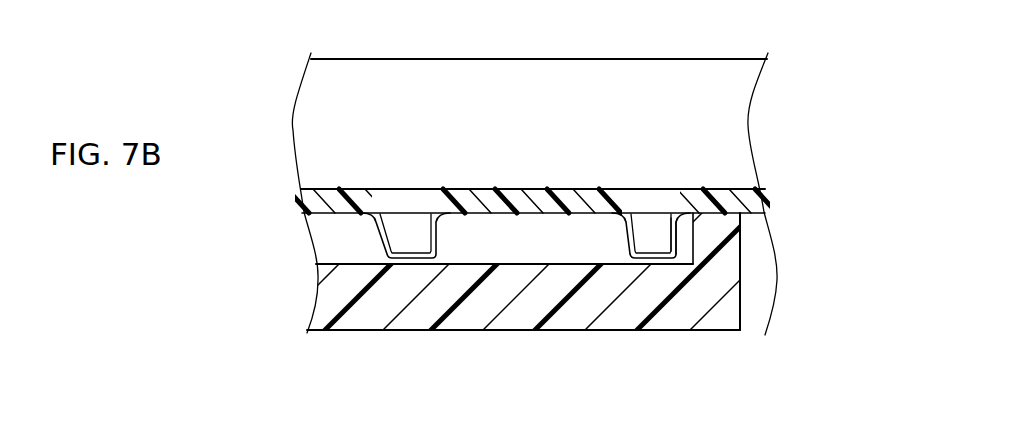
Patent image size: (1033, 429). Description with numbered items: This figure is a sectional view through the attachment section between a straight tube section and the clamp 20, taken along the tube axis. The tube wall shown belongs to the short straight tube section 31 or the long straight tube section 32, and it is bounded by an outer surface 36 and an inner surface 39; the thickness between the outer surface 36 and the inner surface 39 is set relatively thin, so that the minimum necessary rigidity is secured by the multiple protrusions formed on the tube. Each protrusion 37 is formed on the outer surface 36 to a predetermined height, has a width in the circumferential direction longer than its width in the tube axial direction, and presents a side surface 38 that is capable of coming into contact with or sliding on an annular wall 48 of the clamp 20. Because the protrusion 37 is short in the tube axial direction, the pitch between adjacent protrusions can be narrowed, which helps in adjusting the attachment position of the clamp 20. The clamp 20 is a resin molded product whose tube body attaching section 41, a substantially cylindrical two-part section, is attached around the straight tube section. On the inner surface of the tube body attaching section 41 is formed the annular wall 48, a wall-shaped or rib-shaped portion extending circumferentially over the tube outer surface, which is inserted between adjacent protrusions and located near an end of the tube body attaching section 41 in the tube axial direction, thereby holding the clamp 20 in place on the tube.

The clamp 20 is at (562, 333).
The short straight tube section 31 is at (301, 248).
The long straight tube section 32 is at (357, 202).
The outer surface 36 is at (527, 218).
The protrusion 37 is at (417, 262).
The side surface 38 is at (740, 280).
The inner surface 39 is at (509, 190).
The tube body attaching section 41 is at (465, 315).
The annular wall 48 is at (678, 249).